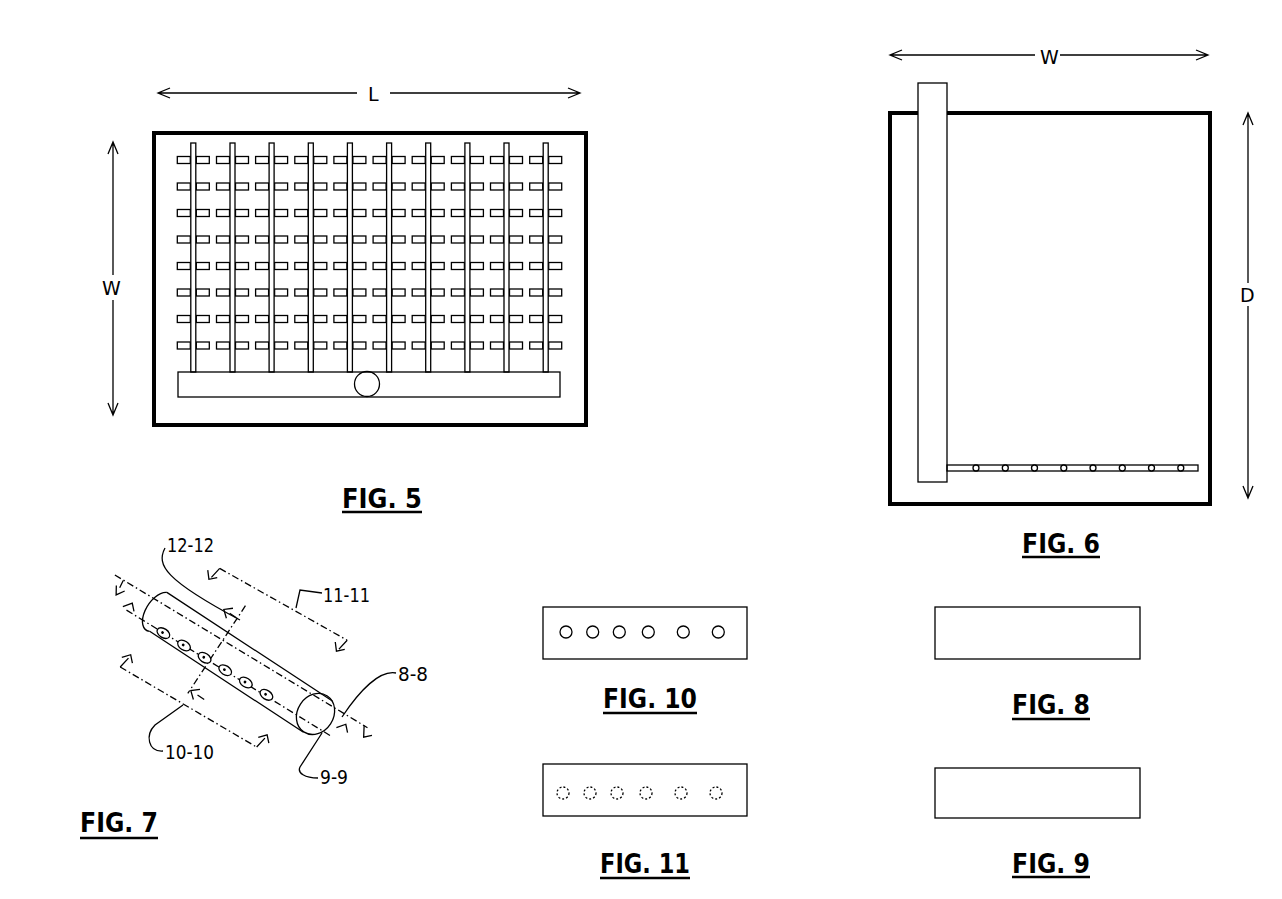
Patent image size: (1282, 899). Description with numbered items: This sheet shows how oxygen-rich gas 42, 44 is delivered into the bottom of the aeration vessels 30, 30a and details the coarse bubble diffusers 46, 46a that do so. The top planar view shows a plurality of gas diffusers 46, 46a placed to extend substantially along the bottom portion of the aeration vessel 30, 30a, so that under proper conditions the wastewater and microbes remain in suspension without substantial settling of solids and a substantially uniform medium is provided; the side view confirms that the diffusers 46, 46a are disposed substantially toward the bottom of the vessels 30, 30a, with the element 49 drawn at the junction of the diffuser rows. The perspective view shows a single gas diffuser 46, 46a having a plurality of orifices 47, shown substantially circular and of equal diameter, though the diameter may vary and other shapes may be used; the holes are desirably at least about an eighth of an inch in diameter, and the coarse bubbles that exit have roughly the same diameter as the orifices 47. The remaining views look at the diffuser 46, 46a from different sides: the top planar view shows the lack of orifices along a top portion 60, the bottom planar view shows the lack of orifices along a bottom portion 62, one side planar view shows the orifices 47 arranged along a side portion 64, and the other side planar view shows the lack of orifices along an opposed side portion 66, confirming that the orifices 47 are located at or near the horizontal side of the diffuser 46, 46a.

In FIG. 5, the aeration vessel 30 is at (443, 279).
In FIG. 6, the aeration vessel 30 is at (976, 308).
In FIG. 5, the aeration vessel 30a is at (588, 205).
In FIG. 6, the aeration vessel 30a is at (888, 173).
In FIG. 5, the oxygen-rich gas 42 is at (410, 424).
In FIG. 6, the oxygen-rich gas 42 is at (845, 271).
In FIG. 5, the oxygen-rich gas 44 is at (488, 383).
In FIG. 6, the oxygen-rich gas 44 is at (918, 93).
In FIG. 5, the coarse bubble diffuser 46 is at (435, 253).
In FIG. 6, the coarse bubble diffuser 46 is at (1126, 508).
In FIG. 7, the coarse bubble diffuser 46 is at (266, 658).
In FIG. 10, the coarse bubble diffuser 46 is at (609, 608).
In FIG. 11, the coarse bubble diffuser 46 is at (590, 790).
In FIG. 8, the coarse bubble diffuser 46 is at (1034, 621).
In FIG. 9, the coarse bubble diffuser 46 is at (1034, 780).
In FIG. 5, the coarse bubble diffuser 46a is at (556, 291).
In FIG. 6, the coarse bubble diffuser 46a is at (1152, 471).
In FIG. 7, the coarse bubble diffuser 46a is at (323, 683).
In FIG. 10, the coarse bubble diffuser 46a is at (598, 607).
In FIG. 11, the coarse bubble diffuser 46a is at (545, 798).
In FIG. 8, the coarse bubble diffuser 46a is at (1034, 621).
In FIG. 9, the coarse bubble diffuser 46a is at (1034, 780).
In FIG. 7, the orifices 47 is at (125, 640).
In FIG. 10, the orifices 47 is at (722, 636).
In FIG. 11, the orifices 47 is at (720, 797).
In FIG. 5, the support rail 49 is at (549, 329).
In FIG. 6, the support rail 49 is at (960, 471).
In FIG. 8, the top portion 60 is at (1100, 617).
In FIG. 9, the bottom portion 62 is at (1103, 792).
In FIG. 10, the side portion 64 is at (687, 620).
In FIG. 11, the opposed side portion 66 is at (685, 826).